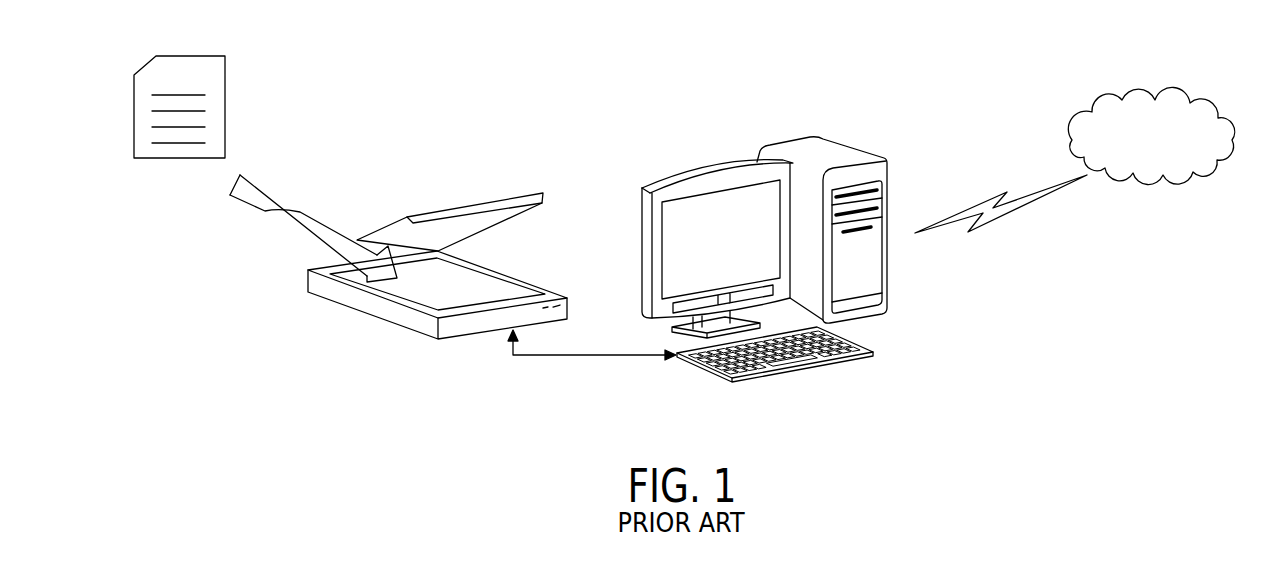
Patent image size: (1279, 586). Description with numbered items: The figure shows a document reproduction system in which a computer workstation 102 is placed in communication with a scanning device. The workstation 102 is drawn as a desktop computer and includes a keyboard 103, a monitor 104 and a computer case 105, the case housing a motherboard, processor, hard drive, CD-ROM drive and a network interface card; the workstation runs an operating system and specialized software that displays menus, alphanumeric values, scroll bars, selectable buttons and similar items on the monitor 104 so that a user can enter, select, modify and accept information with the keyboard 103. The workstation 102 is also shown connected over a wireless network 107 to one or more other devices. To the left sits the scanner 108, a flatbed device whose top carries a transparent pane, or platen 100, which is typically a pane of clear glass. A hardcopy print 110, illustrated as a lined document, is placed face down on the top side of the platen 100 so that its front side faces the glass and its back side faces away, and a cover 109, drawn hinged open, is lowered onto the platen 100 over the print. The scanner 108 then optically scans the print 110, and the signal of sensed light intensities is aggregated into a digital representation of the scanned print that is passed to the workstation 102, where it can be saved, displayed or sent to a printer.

The transparent pane (platen) 100 is at (407, 292).
The computer workstation 102 is at (903, 187).
The keyboard 103 is at (787, 373).
The monitor 104 is at (670, 178).
The computer case 105 is at (792, 138).
The wireless network 107 is at (1132, 98).
The scanner 108 is at (308, 281).
The cover 109 is at (398, 216).
The hardcopy print 110 is at (227, 82).